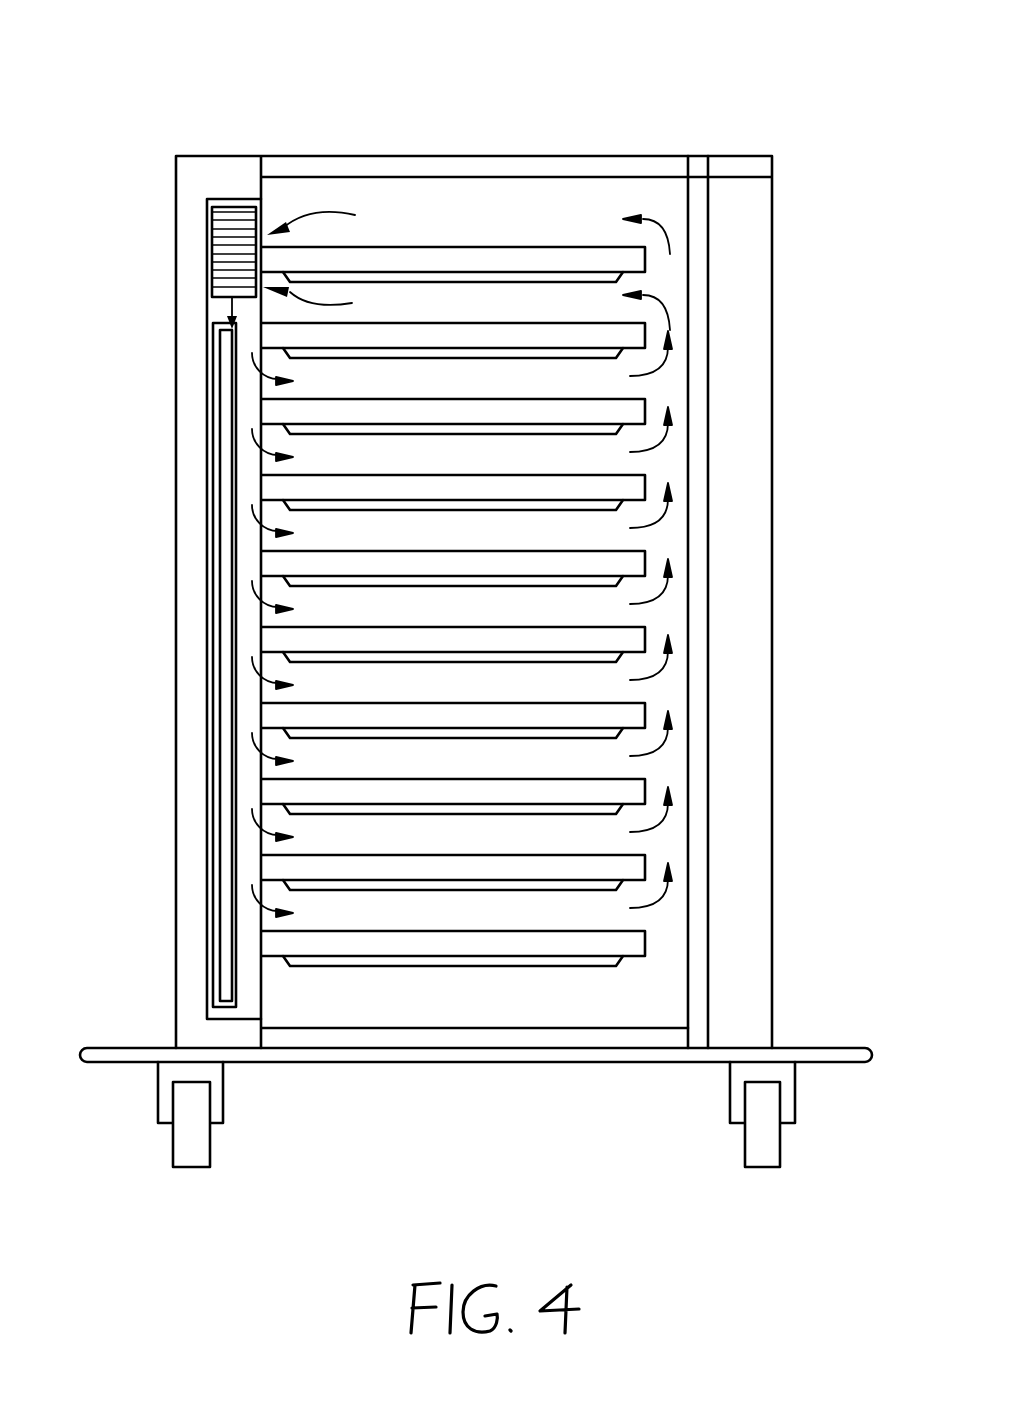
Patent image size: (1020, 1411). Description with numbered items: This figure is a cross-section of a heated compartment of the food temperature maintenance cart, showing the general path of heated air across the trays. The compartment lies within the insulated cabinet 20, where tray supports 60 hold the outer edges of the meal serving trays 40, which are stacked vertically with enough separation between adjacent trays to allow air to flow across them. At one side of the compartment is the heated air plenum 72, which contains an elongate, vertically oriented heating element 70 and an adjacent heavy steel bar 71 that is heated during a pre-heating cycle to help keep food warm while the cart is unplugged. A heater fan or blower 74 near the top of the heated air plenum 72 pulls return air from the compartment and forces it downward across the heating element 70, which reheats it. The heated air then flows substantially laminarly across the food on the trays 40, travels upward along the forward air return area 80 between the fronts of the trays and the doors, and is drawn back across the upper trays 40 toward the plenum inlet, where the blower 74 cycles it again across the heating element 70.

The cabinet 20 is at (273, 156).
The meal serving tray 40 is at (452, 286).
The tray support 60 is at (410, 247).
The heating element 70 is at (212, 392).
The heavy steel bar 71 is at (218, 463).
The heated air plenum 72 is at (215, 313).
The heater fan or blower 74 is at (220, 222).
The forward air return area 80 is at (662, 387).